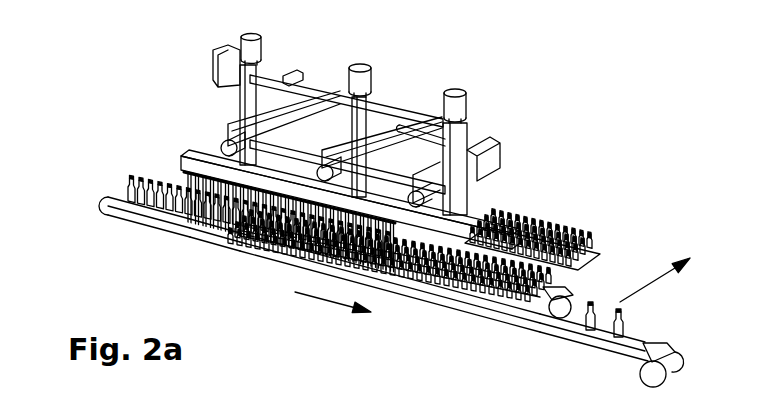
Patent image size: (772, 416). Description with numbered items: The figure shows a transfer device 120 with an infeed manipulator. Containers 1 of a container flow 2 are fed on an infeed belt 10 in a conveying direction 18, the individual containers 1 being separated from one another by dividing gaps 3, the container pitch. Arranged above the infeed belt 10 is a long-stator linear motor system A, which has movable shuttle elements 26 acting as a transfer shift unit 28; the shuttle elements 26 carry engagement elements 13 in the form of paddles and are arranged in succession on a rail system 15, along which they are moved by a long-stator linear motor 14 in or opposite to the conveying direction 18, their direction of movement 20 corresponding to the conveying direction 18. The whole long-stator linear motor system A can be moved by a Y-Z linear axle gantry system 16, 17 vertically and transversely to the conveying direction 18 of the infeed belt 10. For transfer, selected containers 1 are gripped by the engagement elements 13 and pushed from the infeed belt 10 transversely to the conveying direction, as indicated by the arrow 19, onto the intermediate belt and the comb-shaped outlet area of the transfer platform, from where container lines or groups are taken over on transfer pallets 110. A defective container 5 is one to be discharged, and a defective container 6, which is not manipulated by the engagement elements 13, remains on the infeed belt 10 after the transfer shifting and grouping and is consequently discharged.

The transfer device 120 is at (70, 93).
The gantry system 17 is at (241, 38).
The long-stator linear motor 14 is at (282, 123).
The rail system 15 is at (205, 142).
The engagement elements 13 is at (190, 150).
The shuttle elements 26 is at (181, 155).
The transfer shift unit 28 is at (153, 170).
The containers 1 is at (220, 207).
The container flow 2 is at (126, 190).
The infeed belt 10 is at (100, 207).
The dividing gaps 3 is at (131, 218).
The defective container to be discharged 5 is at (190, 235).
The direction of movement 20 is at (238, 248).
The conveying direction 18 is at (314, 302).
The long-stator linear motor system A is at (290, 168).
The gantry system 16 is at (485, 165).
The transfer pallets 110 is at (598, 240).
The arrow 19 is at (647, 287).
The defective container 6 is at (572, 340).